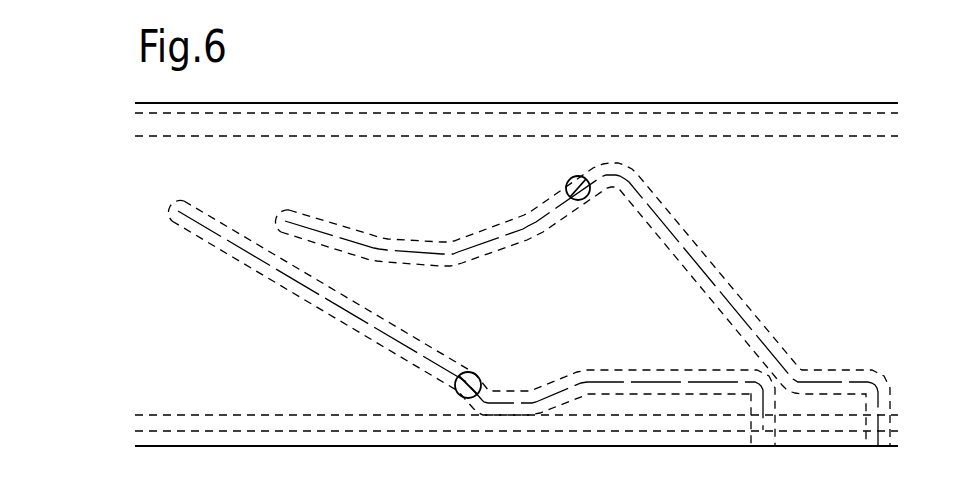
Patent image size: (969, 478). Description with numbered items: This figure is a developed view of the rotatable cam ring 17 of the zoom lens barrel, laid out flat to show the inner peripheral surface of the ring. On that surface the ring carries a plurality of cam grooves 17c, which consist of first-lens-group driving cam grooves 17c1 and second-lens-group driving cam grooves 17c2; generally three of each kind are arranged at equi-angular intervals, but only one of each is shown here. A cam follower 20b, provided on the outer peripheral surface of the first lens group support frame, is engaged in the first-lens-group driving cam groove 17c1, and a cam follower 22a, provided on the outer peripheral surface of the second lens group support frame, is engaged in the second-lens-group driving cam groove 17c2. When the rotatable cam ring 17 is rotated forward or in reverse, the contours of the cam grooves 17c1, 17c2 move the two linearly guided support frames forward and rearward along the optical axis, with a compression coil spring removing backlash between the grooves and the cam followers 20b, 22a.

The rotatable cam ring 17 is at (113, 148).
The cam grooves 17c is at (529, 305).
The first-lens-group driving cam groove 17c1 is at (437, 263).
The second-lens-group driving cam groove 17c2 is at (422, 342).
The cam follower 20b is at (580, 201).
The cam follower 22a is at (455, 384).